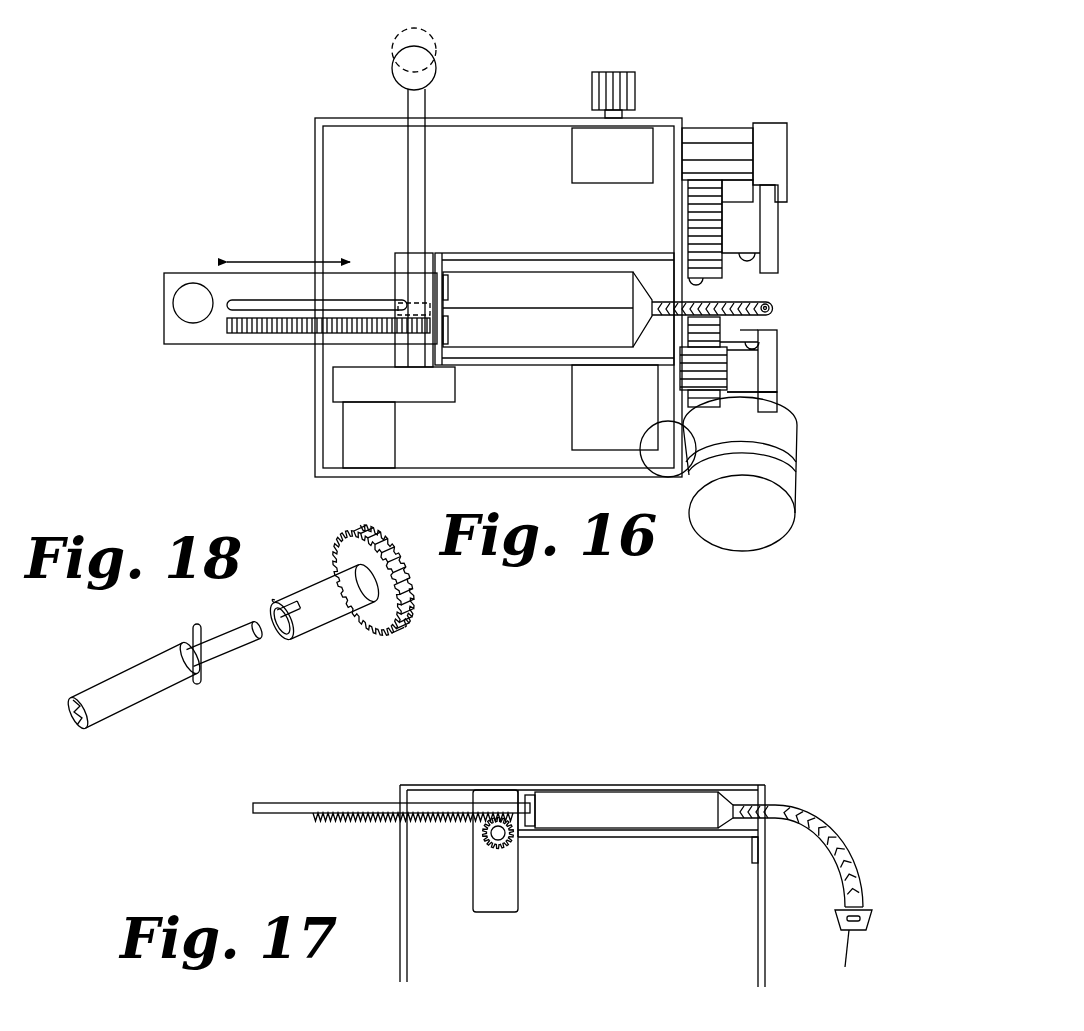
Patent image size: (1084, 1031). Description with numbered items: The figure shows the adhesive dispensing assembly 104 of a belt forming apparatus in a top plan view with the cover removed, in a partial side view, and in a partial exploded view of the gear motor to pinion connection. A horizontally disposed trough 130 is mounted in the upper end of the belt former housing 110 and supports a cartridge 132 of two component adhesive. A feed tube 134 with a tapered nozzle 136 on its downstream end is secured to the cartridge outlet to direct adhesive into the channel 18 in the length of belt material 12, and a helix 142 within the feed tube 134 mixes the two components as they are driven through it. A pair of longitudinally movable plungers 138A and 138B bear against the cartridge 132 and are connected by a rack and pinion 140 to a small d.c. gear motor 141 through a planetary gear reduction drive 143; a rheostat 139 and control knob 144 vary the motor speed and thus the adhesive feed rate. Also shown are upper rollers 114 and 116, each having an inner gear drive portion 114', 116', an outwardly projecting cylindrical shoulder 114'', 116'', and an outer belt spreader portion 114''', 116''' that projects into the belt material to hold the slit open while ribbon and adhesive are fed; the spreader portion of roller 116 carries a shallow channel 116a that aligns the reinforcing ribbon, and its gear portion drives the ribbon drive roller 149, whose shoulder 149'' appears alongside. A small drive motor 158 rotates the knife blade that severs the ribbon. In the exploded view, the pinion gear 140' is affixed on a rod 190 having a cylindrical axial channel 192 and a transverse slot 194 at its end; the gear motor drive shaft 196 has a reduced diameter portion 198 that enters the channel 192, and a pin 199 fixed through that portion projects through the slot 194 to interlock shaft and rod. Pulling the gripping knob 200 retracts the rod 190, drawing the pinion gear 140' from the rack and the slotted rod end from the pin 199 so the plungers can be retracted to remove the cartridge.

In FIG. 17, the length of belt material 12 is at (868, 932).
In FIG. 17, the channel 18 is at (848, 938).
In FIG. 16, the adhesive dispensing assembly 104 is at (278, 235).
In FIG. 16, the belt former housing 110 is at (473, 118).
In FIG. 16, the upper roller 114 is at (765, 199).
In FIG. 16, the inner gear drive portion 114' is at (672, 232).
In FIG. 16, the cylindrical shoulder 114'' is at (807, 229).
In FIG. 16, the outer belt spreader portion 114''' is at (823, 176).
In FIG. 16, the upper roller 116 is at (818, 387).
In FIG. 16, the inner gear drive portion 116' is at (767, 324).
In FIG. 16, the cylindrical shoulder 116'' is at (791, 361).
In FIG. 16, the outer belt spreader portion 116''' is at (784, 409).
In FIG. 16, the shallow channel 116a is at (770, 328).
In FIG. 16, the trough 130 is at (512, 362).
In FIG. 17, the trough 130 is at (638, 826).
In FIG. 16, the cartridge 132 is at (495, 272).
In FIG. 17, the cartridge 132 is at (683, 802).
In FIG. 16, the feed tube 134 is at (667, 316).
In FIG. 17, the feed tube 134 is at (815, 810).
In FIG. 17, the tapered nozzle 136 is at (838, 926).
In FIG. 16, the plunger 138A is at (448, 288).
In FIG. 16, the plunger 138B is at (448, 340).
In FIG. 16, the rheostat 139 is at (645, 148).
In FIG. 16, the rack and pinion 140 is at (300, 279).
In FIG. 17, the rack and pinion 140 is at (509, 886).
In FIG. 16, the pinion gear 140' is at (342, 342).
In FIG. 18, the pinion gear 140' is at (400, 601).
In FIG. 17, the pinion gear 140' is at (547, 853).
In FIG. 16, the gear motor 141 is at (387, 447).
In FIG. 16, the helix 142 is at (752, 305).
In FIG. 17, the helix 142 is at (840, 868).
In FIG. 16, the planetary gear reduction drive 143 is at (345, 382).
In FIG. 16, the control knob 144 is at (636, 80).
In FIG. 16, the ribbon drive roller 149 is at (656, 378).
In FIG. 16, the gear shaft 149'' is at (797, 374).
In FIG. 16, the drive motor 158 is at (708, 540).
In FIG. 16, the rod 190 is at (425, 180).
In FIG. 18, the rod 190 is at (420, 578).
In FIG. 18, the cylindrical axial channel 192 is at (273, 617).
In FIG. 18, the transverse slot 194 is at (285, 596).
In FIG. 18, the gear motor drive shaft 196 is at (163, 690).
In FIG. 18, the reduced diameter portion 198 is at (232, 656).
In FIG. 18, the pin 199 is at (193, 630).
In FIG. 16, the gripping knob 200 is at (438, 76).